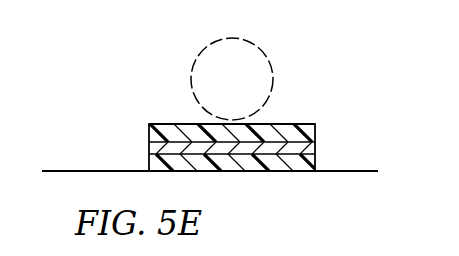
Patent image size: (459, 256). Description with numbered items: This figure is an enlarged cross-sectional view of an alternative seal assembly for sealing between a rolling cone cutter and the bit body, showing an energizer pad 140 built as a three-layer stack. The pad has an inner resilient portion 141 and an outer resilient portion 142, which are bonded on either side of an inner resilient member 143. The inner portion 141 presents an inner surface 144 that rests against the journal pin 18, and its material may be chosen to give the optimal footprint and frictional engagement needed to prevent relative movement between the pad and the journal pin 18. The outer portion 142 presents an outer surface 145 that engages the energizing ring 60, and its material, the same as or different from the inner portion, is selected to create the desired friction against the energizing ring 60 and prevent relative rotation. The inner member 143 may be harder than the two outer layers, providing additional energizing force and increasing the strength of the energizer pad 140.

The journal pin 18 is at (57, 170).
The energizing ring 60 is at (270, 66).
The energizer pad 140 is at (224, 150).
The inner resilient portion 141 is at (148, 166).
The outer resilient portion 142 is at (315, 130).
The inner resilient member 143 is at (315, 148).
The inner surface 144 is at (250, 173).
The outer surface 145 is at (157, 124).